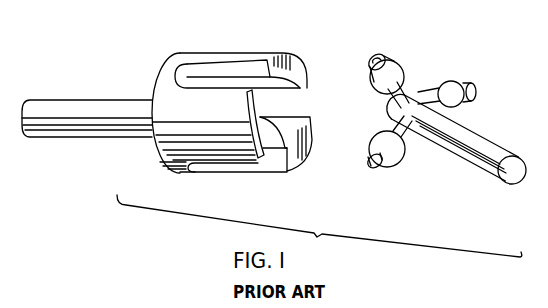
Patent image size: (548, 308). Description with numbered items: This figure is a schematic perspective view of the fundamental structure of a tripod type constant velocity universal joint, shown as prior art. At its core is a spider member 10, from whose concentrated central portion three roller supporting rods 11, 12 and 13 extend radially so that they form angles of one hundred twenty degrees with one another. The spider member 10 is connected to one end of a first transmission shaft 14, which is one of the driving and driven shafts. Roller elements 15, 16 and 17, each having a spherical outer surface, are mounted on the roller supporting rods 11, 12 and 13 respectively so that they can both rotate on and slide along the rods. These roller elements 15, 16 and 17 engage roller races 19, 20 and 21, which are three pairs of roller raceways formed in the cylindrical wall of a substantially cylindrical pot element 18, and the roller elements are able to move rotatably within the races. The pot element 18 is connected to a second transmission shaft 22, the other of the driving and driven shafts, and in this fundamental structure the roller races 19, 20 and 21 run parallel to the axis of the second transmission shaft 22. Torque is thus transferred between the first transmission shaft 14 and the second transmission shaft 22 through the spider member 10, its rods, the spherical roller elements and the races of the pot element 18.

The spider member 10 is at (438, 63).
The roller supporting rod 11 is at (373, 52).
The roller supporting rod 12 is at (375, 168).
The roller supporting rod 13 is at (473, 85).
The first transmission shaft 14 is at (480, 173).
The roller element 15 is at (402, 66).
The roller element 16 is at (400, 164).
The roller element 17 is at (478, 100).
The pot element 18 is at (158, 83).
The roller race 19 is at (218, 73).
The roller race 20 is at (272, 165).
The roller race 21 is at (312, 117).
The second transmission shaft 22 is at (57, 107).